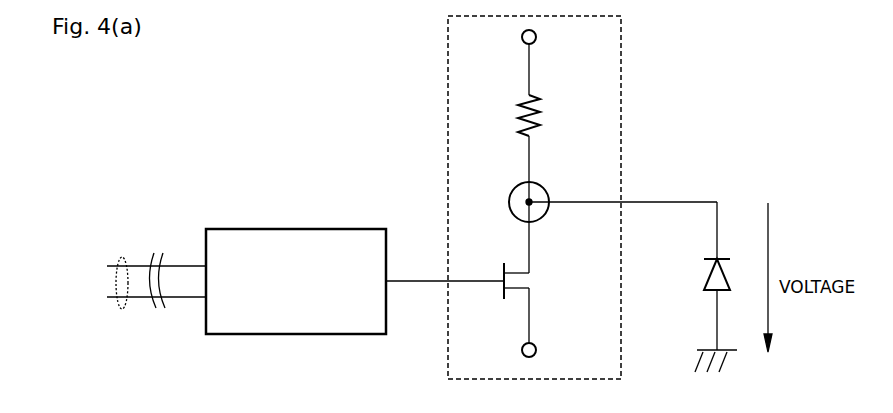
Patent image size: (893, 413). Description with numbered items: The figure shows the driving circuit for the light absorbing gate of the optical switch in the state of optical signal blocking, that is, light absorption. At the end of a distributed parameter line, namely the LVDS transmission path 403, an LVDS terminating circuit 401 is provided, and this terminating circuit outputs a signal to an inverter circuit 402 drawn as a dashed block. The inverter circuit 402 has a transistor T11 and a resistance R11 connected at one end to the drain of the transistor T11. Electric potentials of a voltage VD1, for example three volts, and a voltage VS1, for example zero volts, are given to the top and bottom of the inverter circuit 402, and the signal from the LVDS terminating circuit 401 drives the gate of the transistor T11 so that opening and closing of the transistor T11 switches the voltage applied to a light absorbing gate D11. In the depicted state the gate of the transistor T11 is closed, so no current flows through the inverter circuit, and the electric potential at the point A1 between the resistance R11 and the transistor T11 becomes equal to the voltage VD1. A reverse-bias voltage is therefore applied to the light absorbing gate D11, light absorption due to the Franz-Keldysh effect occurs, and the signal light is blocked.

The LVDS terminating circuit 401 is at (294, 229).
The inverter circuit 402 is at (626, 30).
The distributed parameter line (LVDS transmission path) 403 is at (122, 258).
The voltage VD1 is at (544, 40).
The resistance R11 is at (547, 115).
The point A1 is at (544, 217).
The transistor T11 is at (501, 270).
The voltage VS1 is at (544, 353).
The light absorbing gate D11 is at (728, 287).